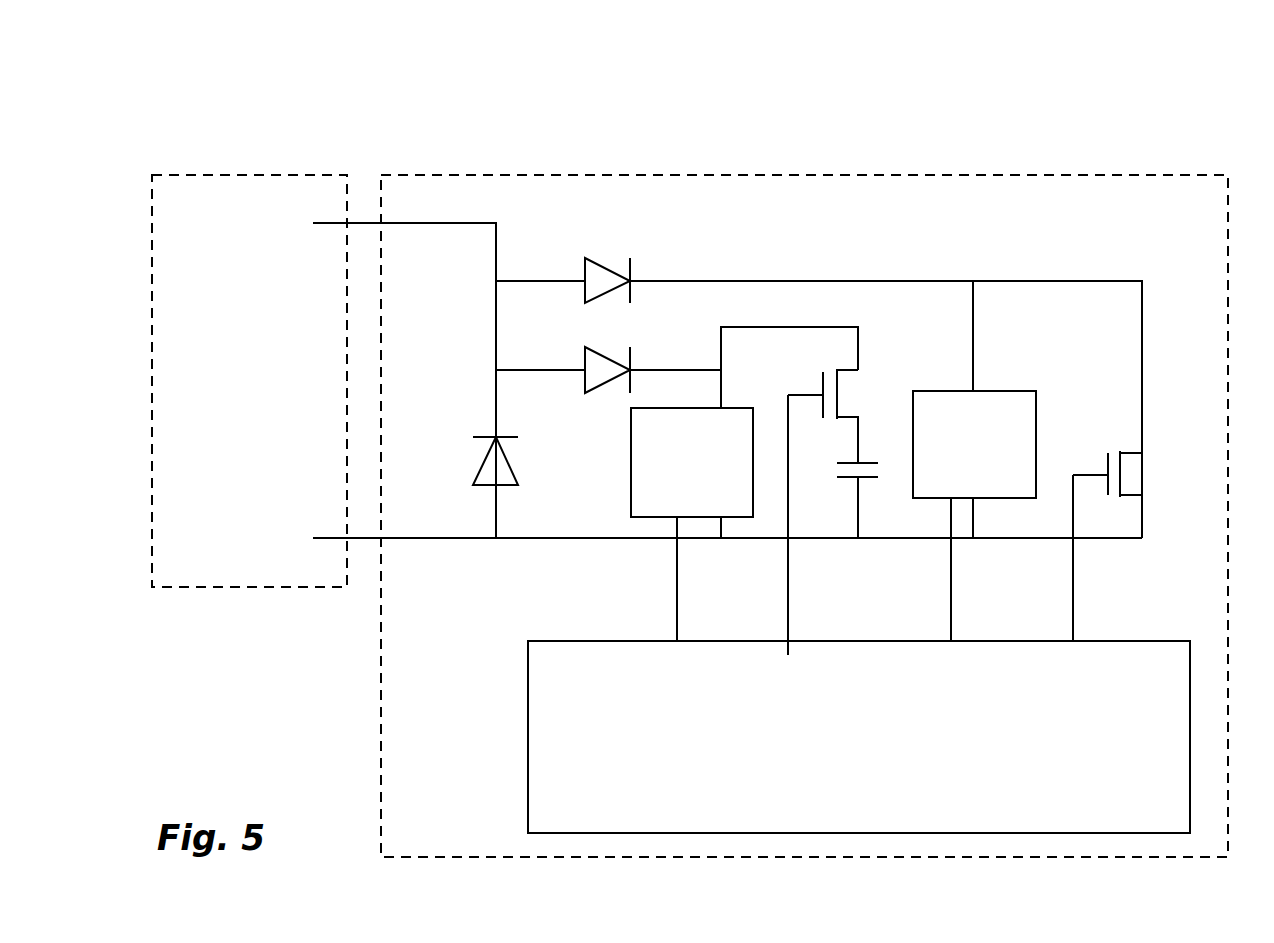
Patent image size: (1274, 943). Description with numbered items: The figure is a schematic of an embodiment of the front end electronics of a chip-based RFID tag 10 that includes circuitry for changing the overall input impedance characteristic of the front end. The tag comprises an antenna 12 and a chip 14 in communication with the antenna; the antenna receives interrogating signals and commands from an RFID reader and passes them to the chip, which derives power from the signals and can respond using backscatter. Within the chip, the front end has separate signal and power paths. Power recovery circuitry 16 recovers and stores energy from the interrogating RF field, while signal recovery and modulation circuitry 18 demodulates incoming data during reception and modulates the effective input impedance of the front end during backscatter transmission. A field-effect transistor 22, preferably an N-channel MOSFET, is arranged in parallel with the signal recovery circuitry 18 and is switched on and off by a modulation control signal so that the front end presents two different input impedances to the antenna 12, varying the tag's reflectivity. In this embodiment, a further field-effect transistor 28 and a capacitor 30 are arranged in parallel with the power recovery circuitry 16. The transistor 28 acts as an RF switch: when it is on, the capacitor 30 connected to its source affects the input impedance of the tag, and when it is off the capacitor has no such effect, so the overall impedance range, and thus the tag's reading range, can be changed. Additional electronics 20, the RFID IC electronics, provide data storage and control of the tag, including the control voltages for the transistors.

The RFID tag 10 is at (1149, 107).
The antenna 12 is at (262, 173).
The chip 14 is at (490, 173).
The power recovery circuitry 16 is at (631, 449).
The signal recovery and modulation circuitry 18 is at (1008, 390).
The additional electronics 20 is at (528, 722).
The field-effect transistor 22 is at (1142, 508).
The field-effect transistor 28 is at (865, 375).
The capacitor 30 is at (852, 482).